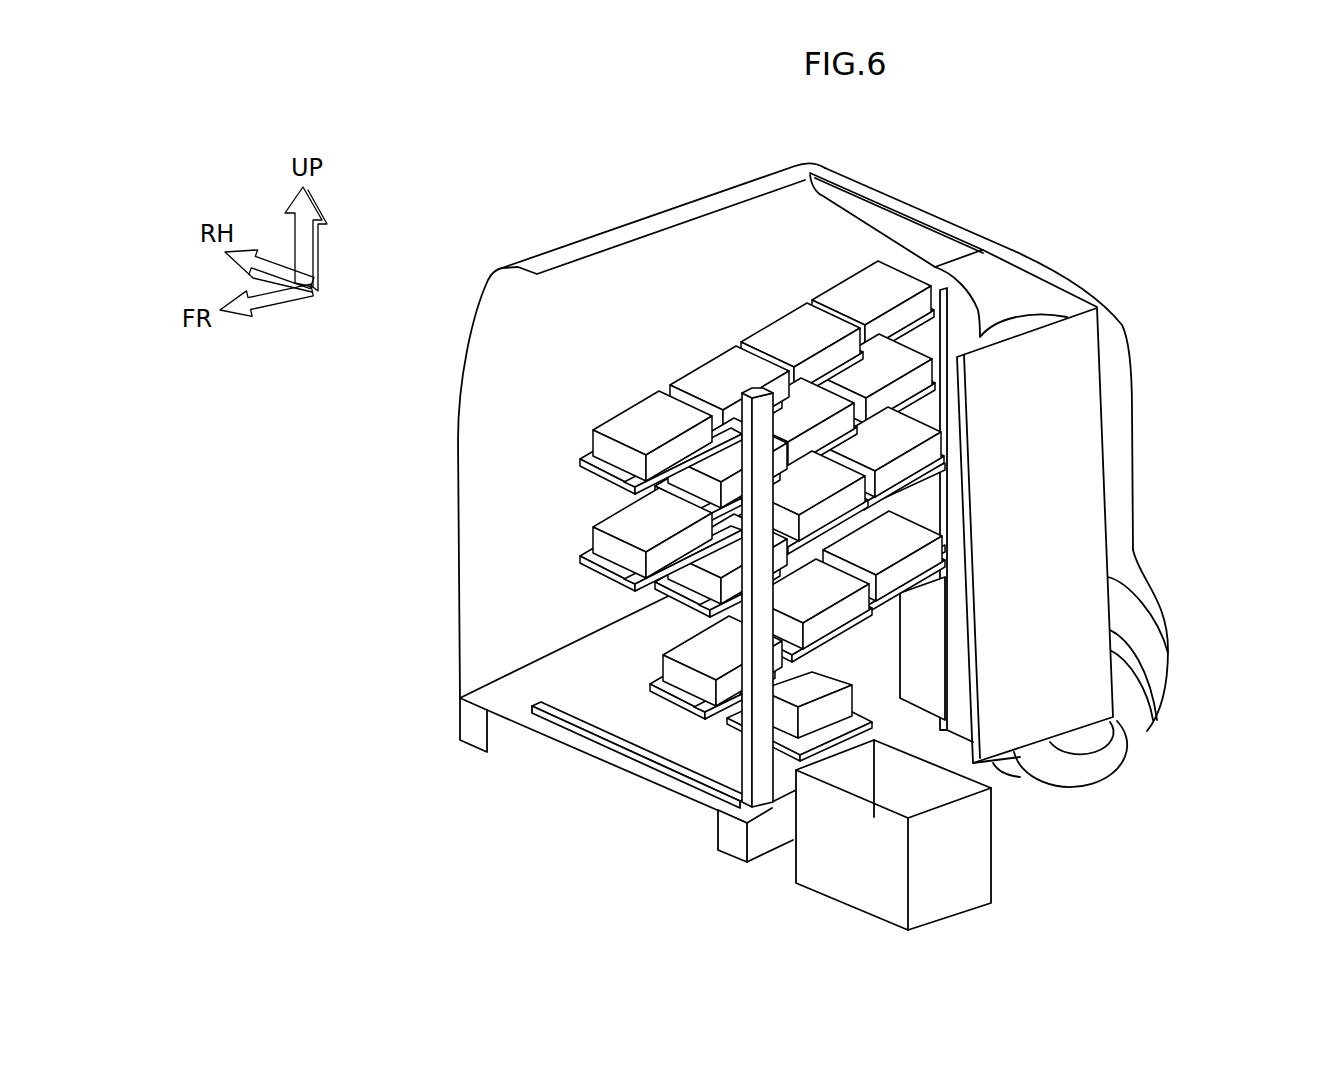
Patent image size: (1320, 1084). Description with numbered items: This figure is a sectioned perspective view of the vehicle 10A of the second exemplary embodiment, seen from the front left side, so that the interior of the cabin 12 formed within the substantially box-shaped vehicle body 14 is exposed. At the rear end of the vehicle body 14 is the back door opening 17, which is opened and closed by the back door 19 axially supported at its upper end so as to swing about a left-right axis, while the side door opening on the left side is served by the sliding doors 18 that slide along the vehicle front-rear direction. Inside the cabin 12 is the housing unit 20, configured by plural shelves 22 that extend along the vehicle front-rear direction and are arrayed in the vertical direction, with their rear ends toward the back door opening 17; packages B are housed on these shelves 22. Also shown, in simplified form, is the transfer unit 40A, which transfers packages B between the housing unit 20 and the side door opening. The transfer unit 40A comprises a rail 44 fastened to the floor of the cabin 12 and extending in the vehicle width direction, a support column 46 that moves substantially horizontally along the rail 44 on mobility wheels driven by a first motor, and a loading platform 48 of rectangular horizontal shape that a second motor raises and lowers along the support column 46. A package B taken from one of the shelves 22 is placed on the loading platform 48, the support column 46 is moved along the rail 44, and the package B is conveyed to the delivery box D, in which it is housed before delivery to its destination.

The vehicle 10A is at (985, 162).
The cabin 12 is at (558, 396).
The vehicle body 14 is at (568, 253).
The back door opening 17 is at (1133, 380).
The sliding doors 18 is at (1095, 513).
The back door 19 is at (1025, 255).
The housing unit 20 is at (775, 314).
The shelves 22 is at (677, 497).
The transfer unit 40A is at (712, 740).
The rail 44 is at (565, 727).
The support column 46 is at (747, 653).
The loading platform 48 is at (750, 720).
The packages B is at (603, 445).
The delivery box D is at (837, 873).